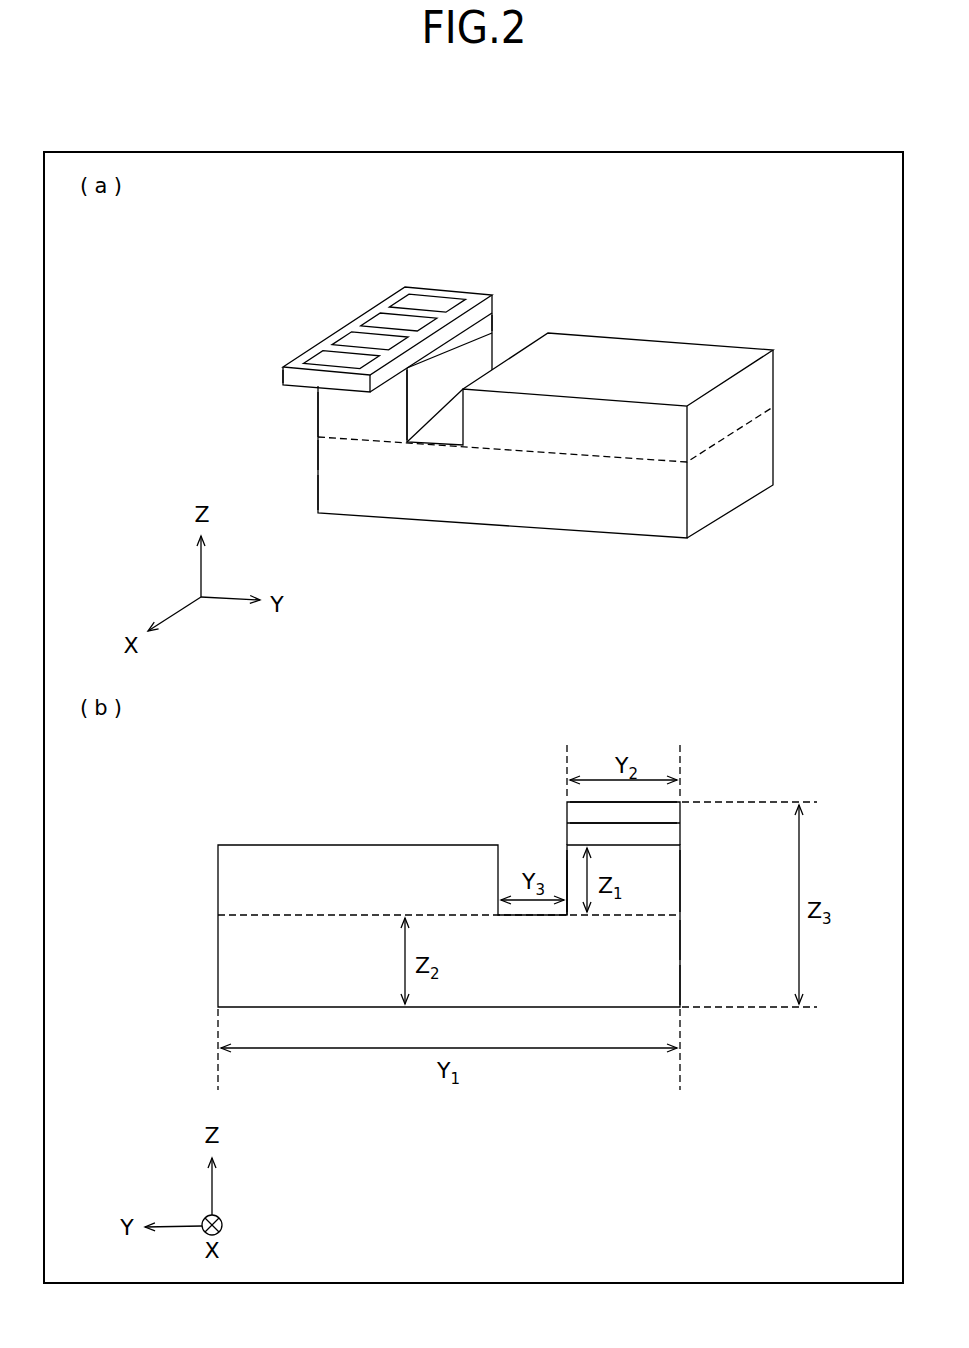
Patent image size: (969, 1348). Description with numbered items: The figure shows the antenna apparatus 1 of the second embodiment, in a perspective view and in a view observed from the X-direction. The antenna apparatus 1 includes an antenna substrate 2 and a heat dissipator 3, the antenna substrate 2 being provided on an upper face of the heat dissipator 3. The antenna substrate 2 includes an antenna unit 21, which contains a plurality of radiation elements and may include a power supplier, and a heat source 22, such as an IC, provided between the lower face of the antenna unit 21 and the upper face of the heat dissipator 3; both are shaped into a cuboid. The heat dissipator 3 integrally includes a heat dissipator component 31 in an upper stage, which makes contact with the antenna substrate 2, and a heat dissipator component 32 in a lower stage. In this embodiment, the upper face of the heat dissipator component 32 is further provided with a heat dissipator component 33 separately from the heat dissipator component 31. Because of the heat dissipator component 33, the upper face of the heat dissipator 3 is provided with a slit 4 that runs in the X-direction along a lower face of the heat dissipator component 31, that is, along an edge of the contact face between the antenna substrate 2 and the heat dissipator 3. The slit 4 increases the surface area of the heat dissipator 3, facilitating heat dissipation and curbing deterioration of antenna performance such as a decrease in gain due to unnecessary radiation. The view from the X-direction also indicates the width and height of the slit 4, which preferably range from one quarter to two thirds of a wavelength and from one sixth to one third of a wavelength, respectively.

The antenna apparatus 1 is at (252, 273).
The antenna substrate 2 is at (550, 233).
The antenna unit 21 is at (477, 293).
The heat source 22 is at (483, 323).
The heat dissipator 3 is at (248, 397).
The heat dissipator component 31 is at (332, 413).
The heat dissipator component 32 is at (332, 458).
The heat dissipator component 33 is at (545, 435).
The slit 4 is at (480, 363).